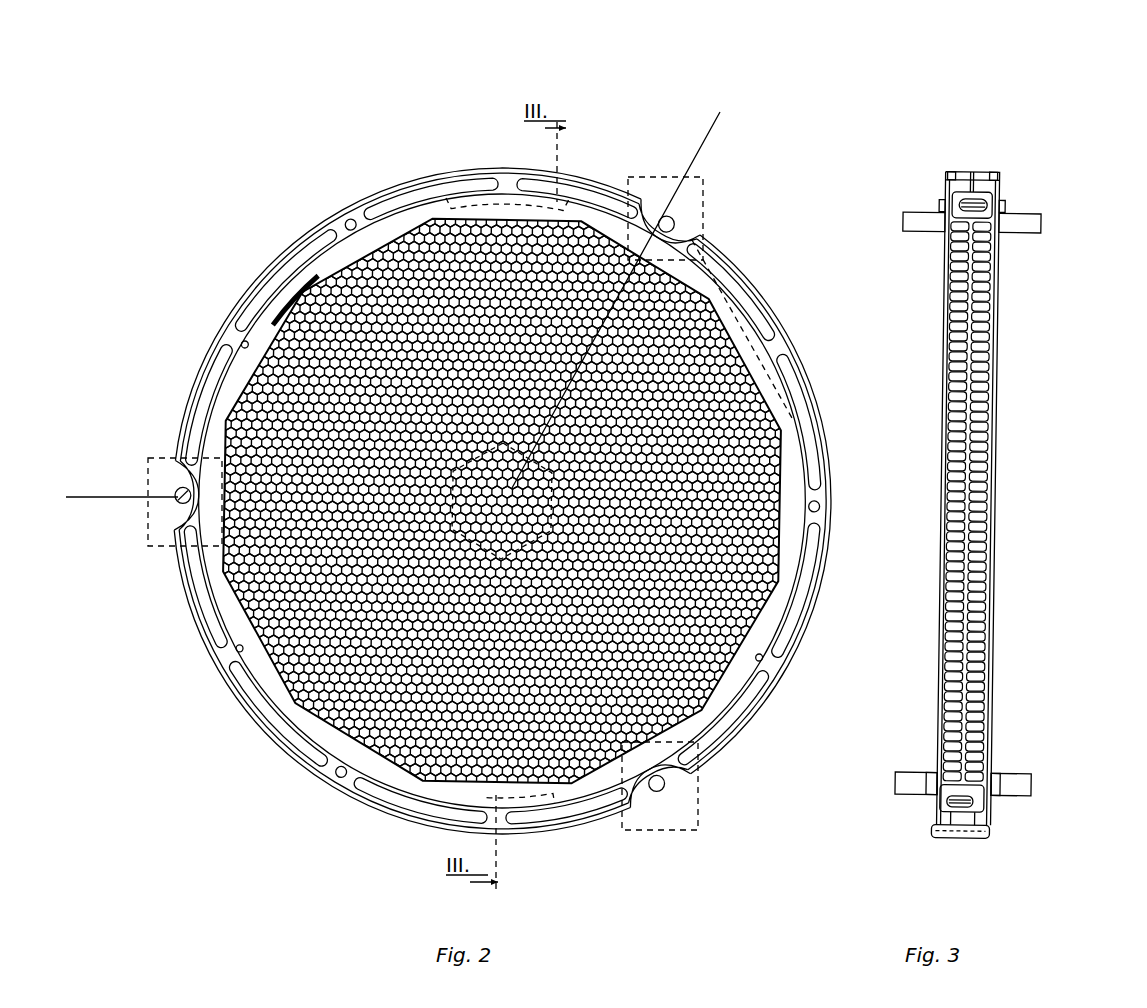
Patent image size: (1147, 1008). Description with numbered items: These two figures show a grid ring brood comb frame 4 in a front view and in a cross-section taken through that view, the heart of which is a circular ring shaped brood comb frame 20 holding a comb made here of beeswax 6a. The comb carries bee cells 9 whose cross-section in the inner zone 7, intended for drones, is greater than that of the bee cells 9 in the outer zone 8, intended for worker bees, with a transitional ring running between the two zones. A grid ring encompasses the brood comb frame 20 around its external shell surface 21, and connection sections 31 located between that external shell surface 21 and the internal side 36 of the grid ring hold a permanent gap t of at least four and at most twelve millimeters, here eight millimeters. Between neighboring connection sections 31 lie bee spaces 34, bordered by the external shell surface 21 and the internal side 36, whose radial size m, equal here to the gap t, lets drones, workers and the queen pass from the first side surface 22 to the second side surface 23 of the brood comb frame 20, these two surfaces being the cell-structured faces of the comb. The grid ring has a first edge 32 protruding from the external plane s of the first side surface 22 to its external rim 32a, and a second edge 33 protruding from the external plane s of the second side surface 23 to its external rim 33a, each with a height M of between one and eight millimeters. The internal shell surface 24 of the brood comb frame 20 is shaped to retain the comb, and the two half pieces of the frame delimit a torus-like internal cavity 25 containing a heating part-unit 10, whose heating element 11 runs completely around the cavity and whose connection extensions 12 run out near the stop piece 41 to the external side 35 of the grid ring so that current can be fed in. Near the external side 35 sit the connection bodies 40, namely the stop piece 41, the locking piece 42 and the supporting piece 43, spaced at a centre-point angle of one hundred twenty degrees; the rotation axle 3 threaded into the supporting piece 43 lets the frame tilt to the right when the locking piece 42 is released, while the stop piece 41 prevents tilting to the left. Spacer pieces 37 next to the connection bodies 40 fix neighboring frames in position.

In FIG. 2, the rotation axle 3 is at (668, 788).
In FIG. 2, the grid ring brood comb frame 4 is at (603, 167).
In FIG. 2, the beeswax 6a is at (560, 548).
In FIG. 2, the inner zone 7 is at (478, 455).
In FIG. 2, the outer zone 8 is at (488, 462).
In FIG. 2, the bee cells 9 is at (496, 470).
In FIG. 2, the heating part-unit 10 is at (268, 287).
In FIG. 2, the heating element 11 is at (285, 273).
In FIG. 3, the heating element 11 is at (975, 806).
In FIG. 2, the connection extensions 12 is at (172, 494).
In FIG. 3, the brood comb frame 20 is at (950, 194).
In FIG. 2, the external shell surface 21 is at (738, 705).
In FIG. 3, the external shell surface 21 is at (977, 178).
In FIG. 3, the first side surface 22 is at (940, 670).
In FIG. 3, the second side surface 23 is at (996, 416).
In FIG. 3, the internal shell surface 24 is at (978, 783).
In FIG. 3, the internal cavity 25 is at (987, 800).
In FIG. 3, the connection sections 31 is at (972, 815).
In FIG. 3, the first edge 32 is at (958, 173).
In FIG. 3, the external rim 32a is at (952, 176).
In FIG. 3, the second edge 33 is at (1000, 176).
In FIG. 3, the external rim 33a is at (1006, 180).
In FIG. 2, the bee spaces 34 is at (822, 455).
In FIG. 3, the bee spaces 34 is at (945, 186).
In FIG. 2, the external side 35 is at (355, 806).
In FIG. 3, the internal side 36 is at (940, 826).
In FIG. 3, the spacer pieces 37 is at (1000, 498).
In FIG. 2, the connection bodies 40 is at (708, 176).
In FIG. 2, the stop piece 41 is at (165, 482).
In FIG. 2, the locking piece 42 is at (688, 228).
In FIG. 3, the locking piece 42 is at (946, 232).
In FIG. 2, the supporting piece 43 is at (656, 796).
In FIG. 3, the supporting piece 43 is at (935, 789).
In FIG. 3, the height M is at (990, 286).
In FIG. 3, the radial size m is at (1000, 178).
In FIG. 3, the external plane s is at (1075, 214).
In FIG. 2, the gap t is at (212, 408).